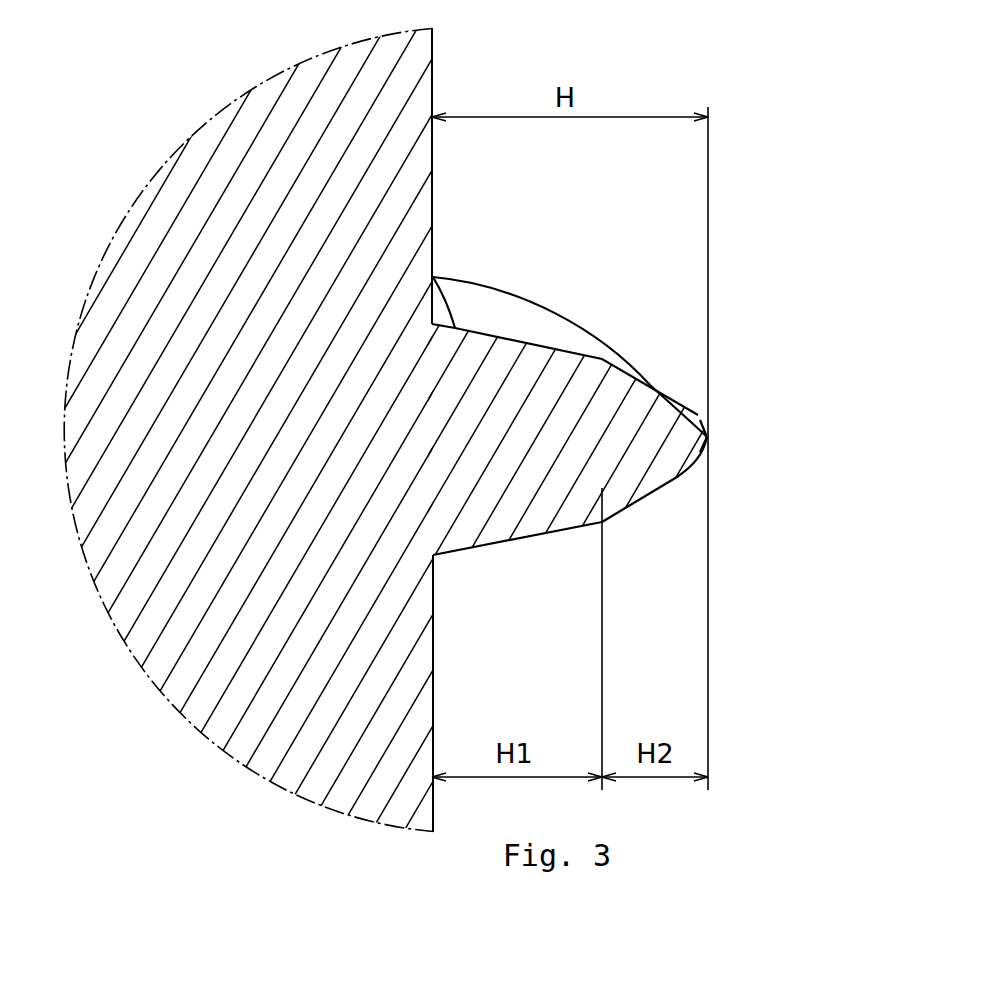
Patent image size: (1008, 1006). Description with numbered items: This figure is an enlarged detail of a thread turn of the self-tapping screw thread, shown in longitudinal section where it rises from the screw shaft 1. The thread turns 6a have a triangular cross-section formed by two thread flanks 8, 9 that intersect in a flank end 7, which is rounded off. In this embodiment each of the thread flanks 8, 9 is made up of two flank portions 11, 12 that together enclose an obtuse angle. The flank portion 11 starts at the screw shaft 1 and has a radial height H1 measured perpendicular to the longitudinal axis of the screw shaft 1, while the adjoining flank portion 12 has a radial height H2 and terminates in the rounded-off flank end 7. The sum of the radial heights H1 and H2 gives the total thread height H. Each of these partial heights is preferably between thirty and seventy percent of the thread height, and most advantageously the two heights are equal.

The screw shaft 1 is at (397, 83).
The thread turns 6a is at (560, 410).
The flank end 7 is at (700, 445).
The thread flank 8 is at (533, 292).
The thread flank 9 is at (612, 537).
The flank portion 11 is at (432, 277).
The flank portion 12 is at (653, 390).